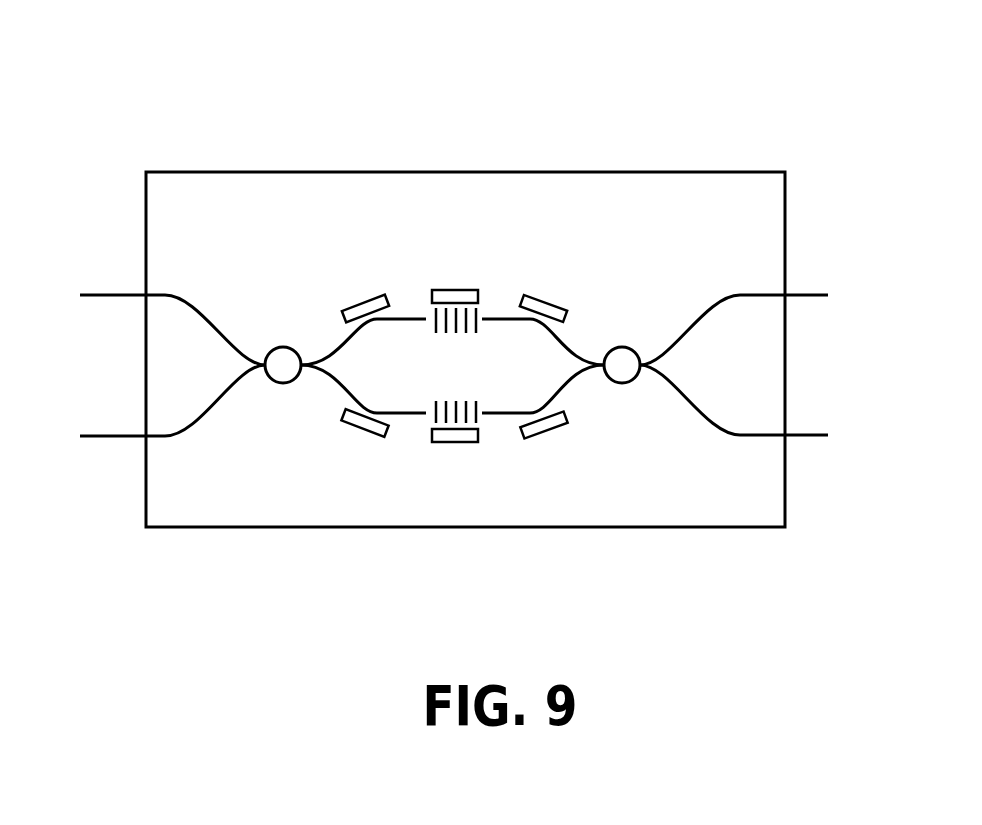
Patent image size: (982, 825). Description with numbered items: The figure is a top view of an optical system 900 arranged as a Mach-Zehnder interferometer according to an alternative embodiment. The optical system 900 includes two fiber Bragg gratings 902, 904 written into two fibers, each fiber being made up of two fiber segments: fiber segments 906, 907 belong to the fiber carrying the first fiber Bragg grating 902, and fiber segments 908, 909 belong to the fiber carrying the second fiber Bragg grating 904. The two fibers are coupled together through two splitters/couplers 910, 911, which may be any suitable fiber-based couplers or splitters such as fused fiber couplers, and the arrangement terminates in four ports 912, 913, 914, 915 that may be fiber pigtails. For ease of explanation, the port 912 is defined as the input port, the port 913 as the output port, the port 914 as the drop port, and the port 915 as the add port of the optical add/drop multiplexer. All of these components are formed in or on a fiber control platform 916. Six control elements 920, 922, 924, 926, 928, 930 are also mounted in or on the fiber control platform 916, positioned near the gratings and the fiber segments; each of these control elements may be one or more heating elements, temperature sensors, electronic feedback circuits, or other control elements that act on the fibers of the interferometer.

The optical system 900 is at (834, 45).
The fiber Bragg grating 902 is at (485, 313).
The fiber Bragg grating 904 is at (483, 423).
The fiber segment 906 is at (590, 350).
The fiber segment 907 is at (413, 303).
The fiber segment 908 is at (572, 395).
The fiber segment 909 is at (403, 420).
The splitter/coupler 910 is at (623, 362).
The splitter/coupler 911 is at (283, 365).
The port 912 is at (149, 324).
The port 913 is at (806, 295).
The port 914 is at (149, 407).
The port 915 is at (756, 407).
The fiber control platform 916 is at (743, 510).
The control element 920 is at (366, 312).
The control element 922 is at (350, 422).
The control element 924 is at (560, 308).
The control element 926 is at (460, 290).
The control element 928 is at (457, 443).
The control element 930 is at (555, 430).